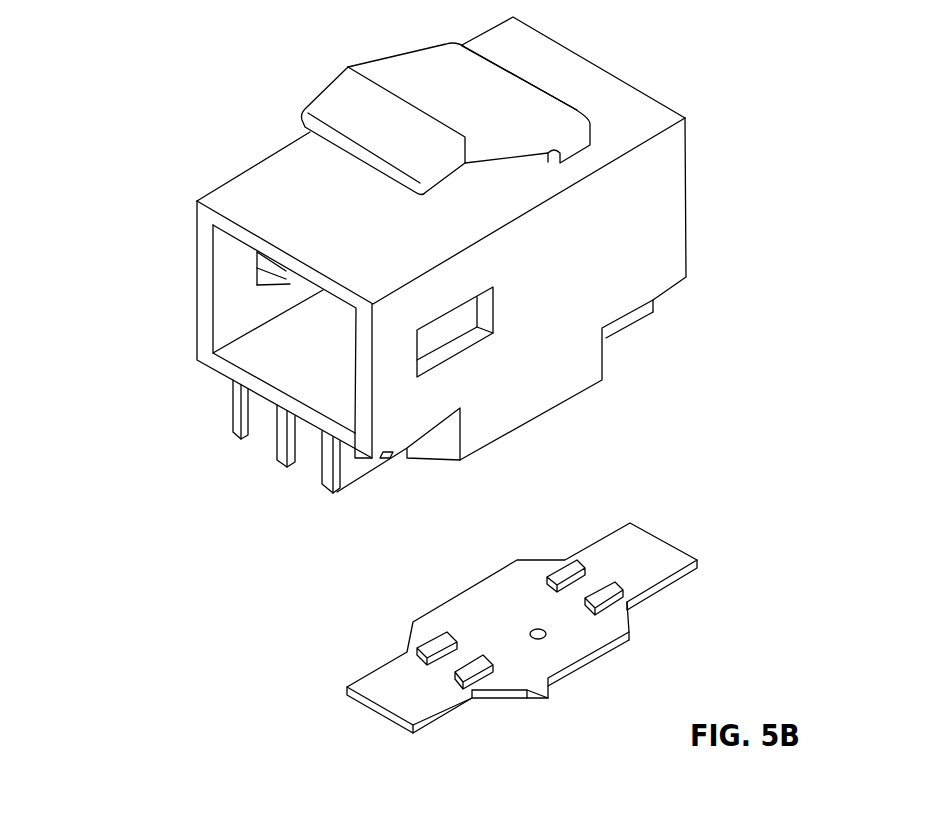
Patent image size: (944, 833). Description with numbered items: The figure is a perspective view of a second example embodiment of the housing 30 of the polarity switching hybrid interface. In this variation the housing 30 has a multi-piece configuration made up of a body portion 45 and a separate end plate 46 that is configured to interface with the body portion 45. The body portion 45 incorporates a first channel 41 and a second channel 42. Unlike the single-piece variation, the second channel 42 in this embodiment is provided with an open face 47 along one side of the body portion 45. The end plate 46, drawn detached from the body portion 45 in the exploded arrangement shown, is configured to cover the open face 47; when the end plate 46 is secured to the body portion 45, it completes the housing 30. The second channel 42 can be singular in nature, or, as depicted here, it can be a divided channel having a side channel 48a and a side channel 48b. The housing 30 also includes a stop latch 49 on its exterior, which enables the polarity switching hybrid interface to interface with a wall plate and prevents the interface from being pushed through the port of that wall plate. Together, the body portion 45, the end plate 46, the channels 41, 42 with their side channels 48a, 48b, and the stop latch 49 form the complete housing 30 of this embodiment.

The housing 30 is at (193, 39).
The first channel 41 is at (226, 284).
The second channel 42 is at (300, 566).
The body portion 45 is at (572, 70).
The end plate 46 is at (662, 542).
The open face 47 is at (275, 453).
The side channel 48a is at (255, 413).
The side channel 48b is at (318, 467).
The stop latch 49 is at (428, 73).